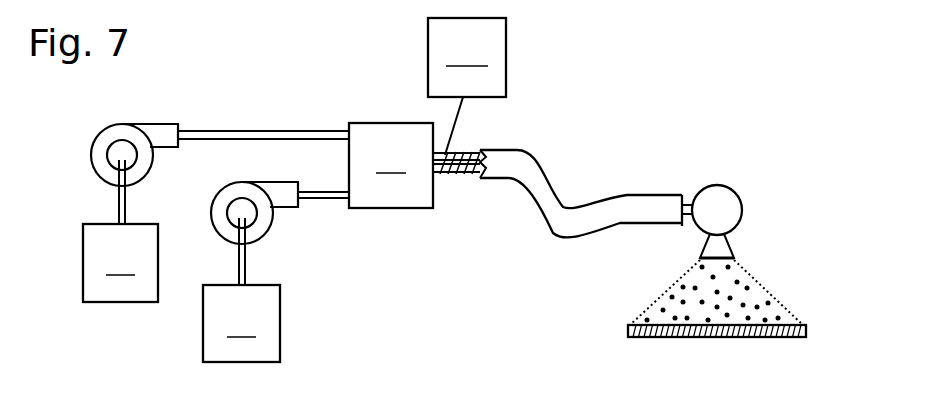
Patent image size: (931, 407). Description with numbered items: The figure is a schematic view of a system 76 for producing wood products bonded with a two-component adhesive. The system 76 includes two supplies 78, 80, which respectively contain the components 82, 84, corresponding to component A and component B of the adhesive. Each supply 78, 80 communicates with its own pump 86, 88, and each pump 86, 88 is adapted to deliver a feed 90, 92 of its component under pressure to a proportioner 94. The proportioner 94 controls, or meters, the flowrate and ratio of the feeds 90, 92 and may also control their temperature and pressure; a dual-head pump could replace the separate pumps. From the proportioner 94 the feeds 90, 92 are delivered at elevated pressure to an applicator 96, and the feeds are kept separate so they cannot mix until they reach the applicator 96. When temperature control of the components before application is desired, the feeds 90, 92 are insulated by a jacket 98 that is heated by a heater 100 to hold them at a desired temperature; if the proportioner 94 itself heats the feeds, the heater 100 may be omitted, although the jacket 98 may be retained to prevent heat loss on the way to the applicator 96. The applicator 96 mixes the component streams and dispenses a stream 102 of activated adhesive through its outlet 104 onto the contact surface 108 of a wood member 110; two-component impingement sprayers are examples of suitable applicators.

The system 76 is at (262, 56).
The supply 78 is at (113, 253).
The supply 80 is at (276, 290).
The component 82 is at (132, 305).
The component 84 is at (282, 323).
The pump 86 is at (115, 122).
The pump 88 is at (270, 230).
The feed 90 is at (243, 131).
The feed 92 is at (338, 203).
The proportioner 94 is at (391, 165).
The applicator 96 is at (717, 184).
The jacket 98 is at (622, 194).
The heater 100 is at (467, 86).
The stream 102 is at (766, 293).
The outlet 104 is at (735, 257).
The contact surface 108 is at (661, 325).
The wood member 110 is at (729, 338).